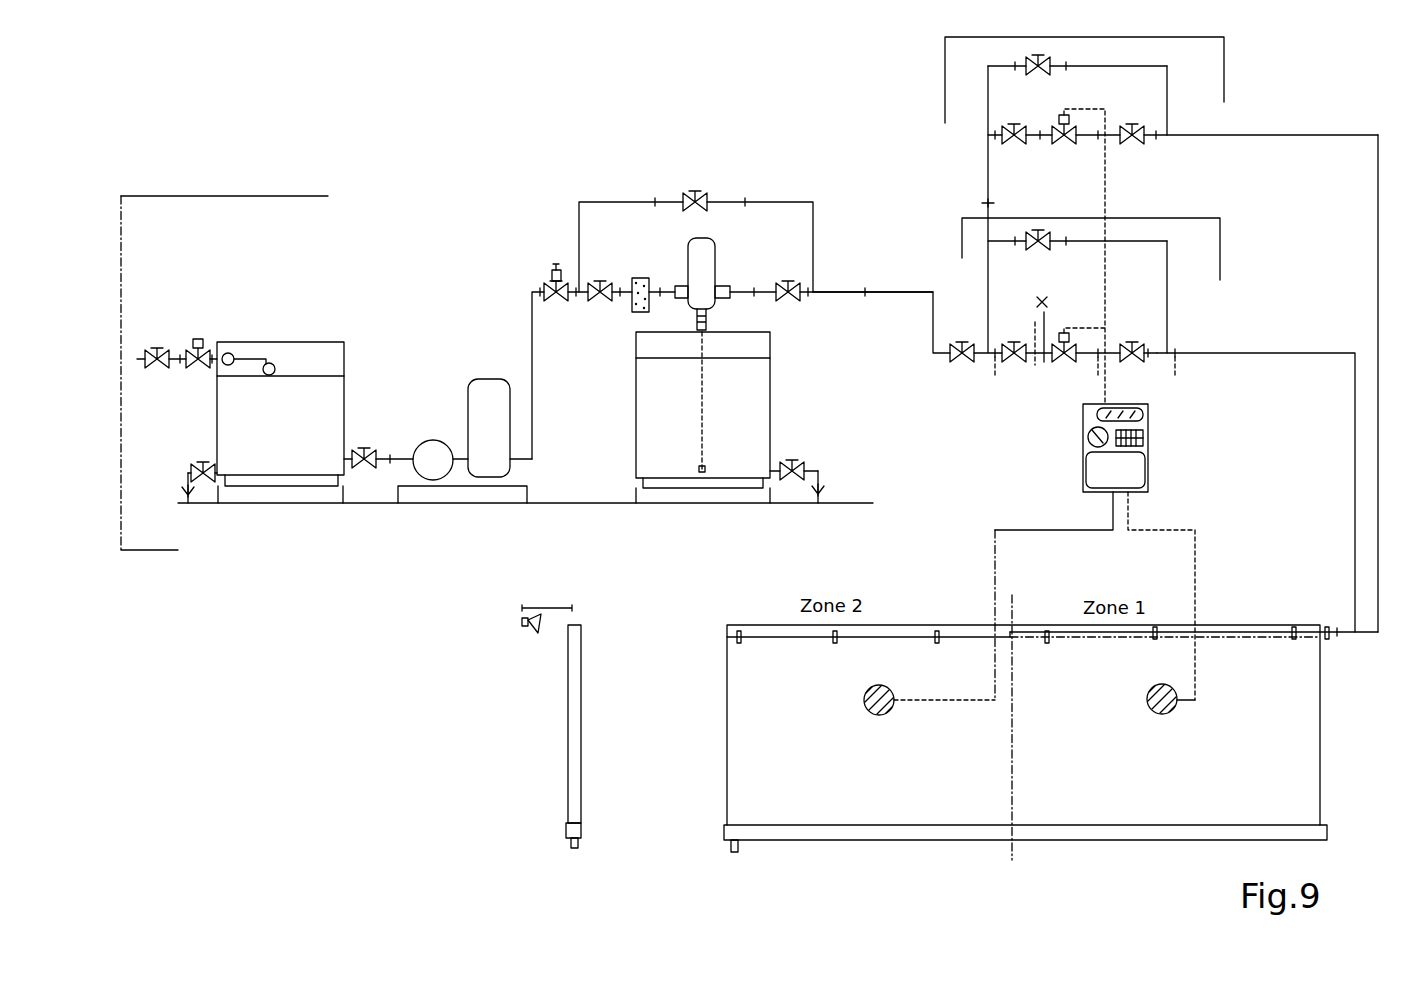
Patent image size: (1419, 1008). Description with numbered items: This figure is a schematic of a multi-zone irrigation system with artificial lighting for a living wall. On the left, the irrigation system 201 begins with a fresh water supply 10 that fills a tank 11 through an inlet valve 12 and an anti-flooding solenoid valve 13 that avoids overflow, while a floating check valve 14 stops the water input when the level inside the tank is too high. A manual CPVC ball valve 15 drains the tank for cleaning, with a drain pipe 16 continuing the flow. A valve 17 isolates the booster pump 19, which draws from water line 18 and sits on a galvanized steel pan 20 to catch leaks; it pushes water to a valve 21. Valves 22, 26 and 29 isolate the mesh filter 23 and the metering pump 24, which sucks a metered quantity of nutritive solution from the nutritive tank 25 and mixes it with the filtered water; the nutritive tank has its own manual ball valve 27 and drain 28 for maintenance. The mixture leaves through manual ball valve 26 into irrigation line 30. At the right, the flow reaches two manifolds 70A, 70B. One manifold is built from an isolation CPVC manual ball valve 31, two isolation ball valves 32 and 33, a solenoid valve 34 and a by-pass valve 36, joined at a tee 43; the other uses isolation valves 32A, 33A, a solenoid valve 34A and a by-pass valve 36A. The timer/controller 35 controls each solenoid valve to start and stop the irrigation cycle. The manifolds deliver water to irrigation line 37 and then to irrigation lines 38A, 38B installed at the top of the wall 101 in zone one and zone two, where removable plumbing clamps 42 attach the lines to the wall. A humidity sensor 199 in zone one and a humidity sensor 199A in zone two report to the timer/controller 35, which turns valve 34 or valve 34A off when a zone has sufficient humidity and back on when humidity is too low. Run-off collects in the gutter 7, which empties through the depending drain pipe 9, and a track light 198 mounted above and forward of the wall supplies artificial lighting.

The gutter 7 is at (566, 833).
The drain pipe 9 is at (580, 848).
The fresh water supply 10 is at (140, 358).
The tank 11 is at (338, 340).
The inlet valve 12 is at (158, 364).
The anti-flooding solenoid valve 13 is at (196, 339).
The floating check valve 14 is at (240, 355).
The manual CPVC ball valve 15 is at (200, 463).
The drain pipe 16 is at (186, 485).
The valve 17 is at (364, 448).
The water line 18 is at (388, 456).
The booster pump 19 is at (462, 436).
The pan 20 is at (536, 473).
The valve 21 is at (553, 262).
The valve 22 is at (598, 300).
The mesh filter 23 is at (644, 276).
The pump 24 is at (718, 276).
The nutritive tank 25 is at (775, 417).
The manual ball valve 26 is at (788, 298).
The manual ball valve 27 is at (792, 461).
The drain 28 is at (822, 484).
The valve 29 is at (704, 195).
The irrigation line 30 is at (870, 290).
The isolation CPVC manual ball valve 31 is at (962, 342).
The isolation CPVC manual ball valve 32 is at (1014, 342).
The isolation CPVC manual ball valve 33 is at (1130, 342).
The solenoid valve 34 is at (1062, 358).
The timer/controller 35 is at (1152, 449).
The by-pass valve 36 is at (1040, 230).
The irrigation line 37 is at (1240, 350).
The isolation valve 32A is at (1000, 140).
The isolation valve 33A is at (1133, 140).
The solenoid valve 34A is at (1064, 141).
The by-pass valve 36A is at (1038, 71).
The branch tee 43 is at (984, 203).
The manifold 70A is at (1091, 235).
The manifold 70B is at (1084, 68).
The irrigation line 38A is at (1278, 638).
The irrigation line 38B is at (885, 634).
The removable plumbing clamp 42 is at (737, 646).
The wall 101 is at (575, 790).
The track light 198 is at (518, 619).
The humidity sensor 199 is at (1178, 705).
The humidity sensor 199A is at (862, 702).
The irrigation system 201 is at (221, 373).